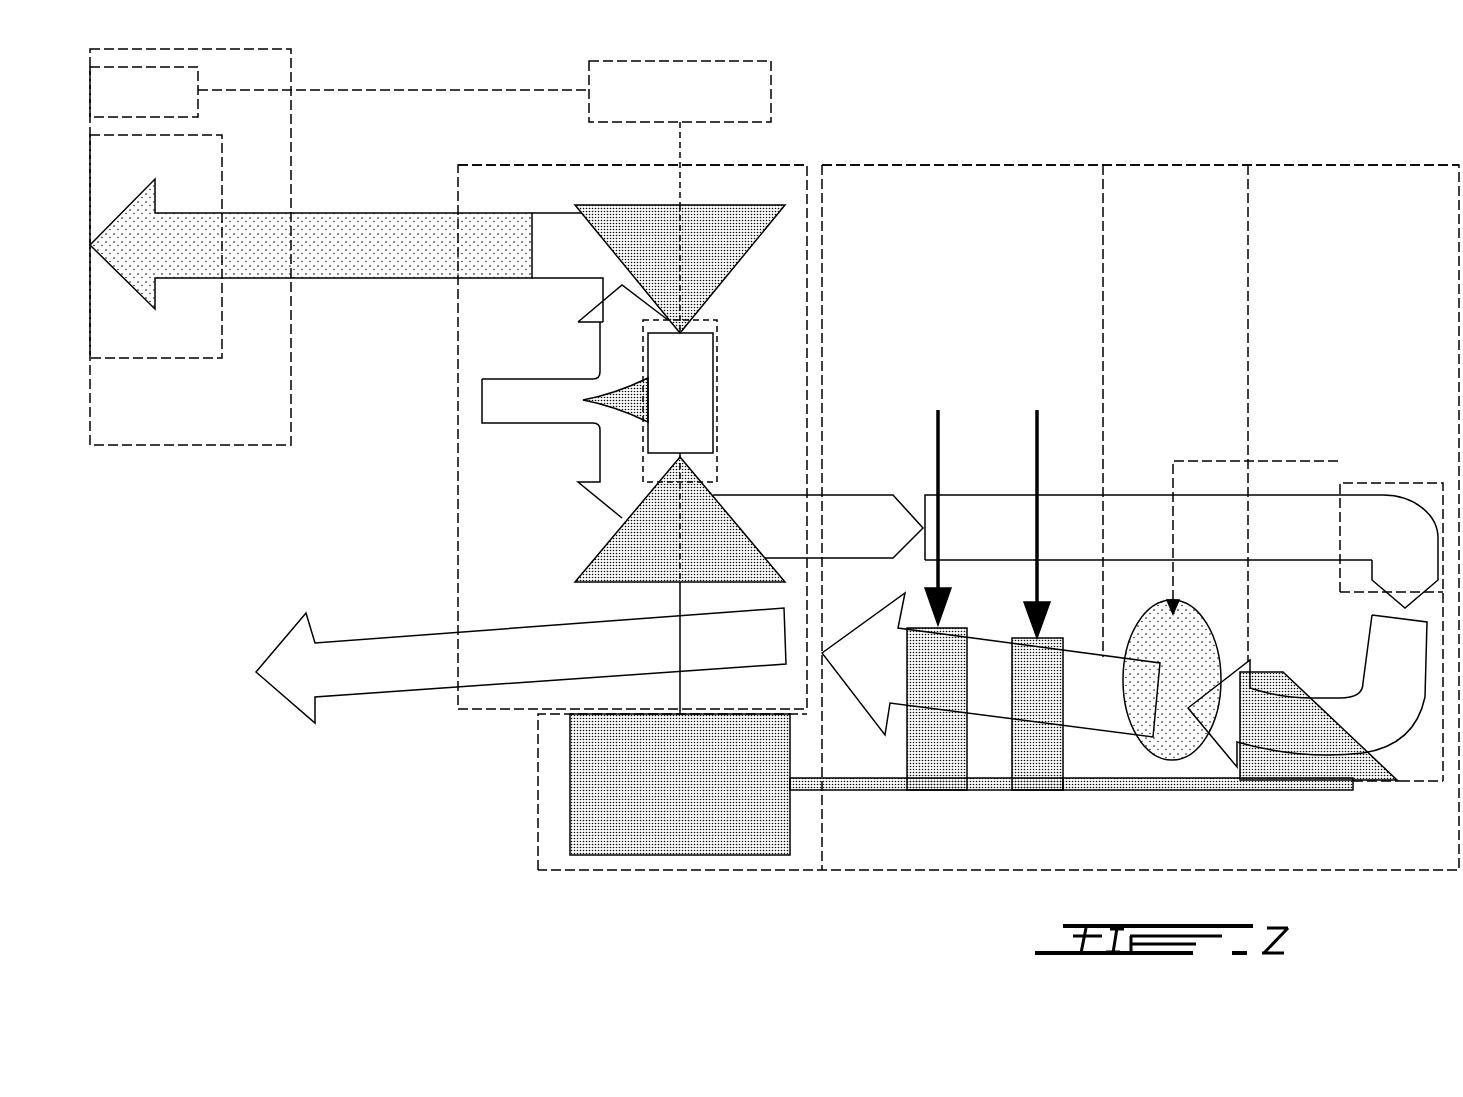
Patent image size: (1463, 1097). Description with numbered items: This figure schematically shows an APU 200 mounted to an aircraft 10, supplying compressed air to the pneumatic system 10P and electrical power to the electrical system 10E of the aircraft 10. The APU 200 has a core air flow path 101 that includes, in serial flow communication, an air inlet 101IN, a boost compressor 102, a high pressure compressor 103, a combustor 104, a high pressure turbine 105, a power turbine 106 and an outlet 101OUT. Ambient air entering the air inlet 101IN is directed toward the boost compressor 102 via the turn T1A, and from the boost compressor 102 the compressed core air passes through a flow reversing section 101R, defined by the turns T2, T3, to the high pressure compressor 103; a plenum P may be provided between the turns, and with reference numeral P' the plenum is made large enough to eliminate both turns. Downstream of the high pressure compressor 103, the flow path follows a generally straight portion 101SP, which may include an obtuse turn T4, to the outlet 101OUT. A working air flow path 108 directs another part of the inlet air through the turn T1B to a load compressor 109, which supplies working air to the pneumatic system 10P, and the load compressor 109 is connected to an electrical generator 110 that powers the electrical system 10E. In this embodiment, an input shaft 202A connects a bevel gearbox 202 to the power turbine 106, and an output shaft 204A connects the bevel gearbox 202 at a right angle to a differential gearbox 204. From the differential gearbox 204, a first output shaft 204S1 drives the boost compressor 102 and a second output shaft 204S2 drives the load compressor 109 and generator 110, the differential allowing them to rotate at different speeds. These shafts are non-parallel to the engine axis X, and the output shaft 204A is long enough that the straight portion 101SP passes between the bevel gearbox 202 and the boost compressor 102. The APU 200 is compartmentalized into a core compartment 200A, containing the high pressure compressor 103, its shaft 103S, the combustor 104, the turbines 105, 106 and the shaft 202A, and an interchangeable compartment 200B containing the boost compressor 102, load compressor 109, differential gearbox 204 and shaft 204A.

The aircraft 10 is at (277, 430).
The electrical system 10E is at (165, 108).
The pneumatic system 10P is at (210, 173).
The electrical generator 110 is at (772, 92).
The APU 200 is at (453, 168).
The interchangeable compartment 200B is at (527, 204).
The core compartment 200A is at (1434, 204).
The load compressor 109 is at (597, 203).
The second output shaft 204S2 is at (683, 156).
The working air flow path 108 is at (575, 260).
The turn T1B is at (586, 364).
The air inlet 101IN is at (562, 413).
The turn T1A is at (587, 436).
The first output shaft 204S1 is at (657, 468).
The boost compressor 102 is at (603, 548).
The differential gearbox 204 is at (716, 394).
The core air flow path 101 is at (856, 493).
The turn T2 is at (1430, 500).
The plenum P' is at (1391, 582).
The combustor 104 is at (1265, 460).
The flow reversing section 101R is at (1336, 632).
The high pressure compressor 103 is at (1292, 760).
The turn T3 is at (1336, 680).
The turn T4 is at (836, 620).
The power turbine 106 is at (945, 772).
The high pressure turbine 105 is at (1043, 772).
The input shaft 202A is at (862, 792).
The shaft 103S is at (1112, 792).
The bevel gearbox 202 is at (570, 840).
The output shaft 204A is at (678, 688).
The outlet 101OUT is at (383, 680).
The generally straight portion 101SP is at (832, 728).
The engine axis X is at (1372, 786).
The plenum P is at (1421, 819).